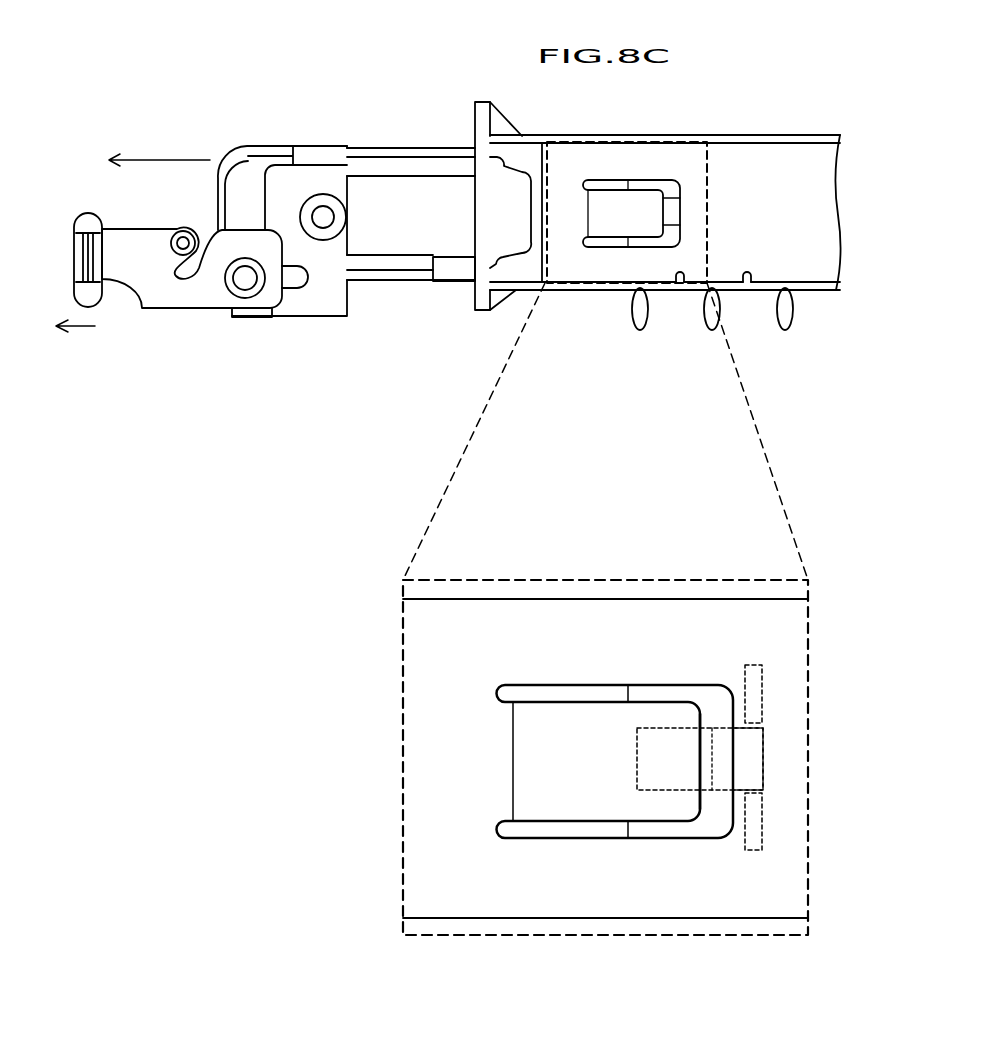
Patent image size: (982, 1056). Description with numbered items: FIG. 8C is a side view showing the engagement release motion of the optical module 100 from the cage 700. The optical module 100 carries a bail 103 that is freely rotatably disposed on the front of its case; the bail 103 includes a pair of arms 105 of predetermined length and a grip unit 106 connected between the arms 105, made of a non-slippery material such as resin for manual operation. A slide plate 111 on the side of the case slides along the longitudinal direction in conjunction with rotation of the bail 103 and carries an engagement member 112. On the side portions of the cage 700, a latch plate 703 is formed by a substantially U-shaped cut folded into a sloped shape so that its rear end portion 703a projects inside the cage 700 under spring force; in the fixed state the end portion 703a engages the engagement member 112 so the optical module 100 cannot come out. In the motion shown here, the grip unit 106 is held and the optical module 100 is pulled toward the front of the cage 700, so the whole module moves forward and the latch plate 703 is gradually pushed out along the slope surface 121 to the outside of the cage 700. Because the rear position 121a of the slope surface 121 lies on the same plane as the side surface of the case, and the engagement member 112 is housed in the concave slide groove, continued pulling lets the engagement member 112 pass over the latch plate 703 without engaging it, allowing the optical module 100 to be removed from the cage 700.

The optical module 100 is at (320, 121).
The slide plate 111 is at (400, 201).
The arms 105 is at (172, 292).
The grip unit 106 is at (88, 218).
The bail 103 is at (130, 320).
The cage 700 is at (774, 135).
The latch plate 703 is at (640, 207).
The rear end portion of latch plate 703a is at (698, 757).
The slope surface 121 is at (647, 762).
The rear position of slope surface 121a is at (757, 760).
The engagement member 112 is at (752, 678).